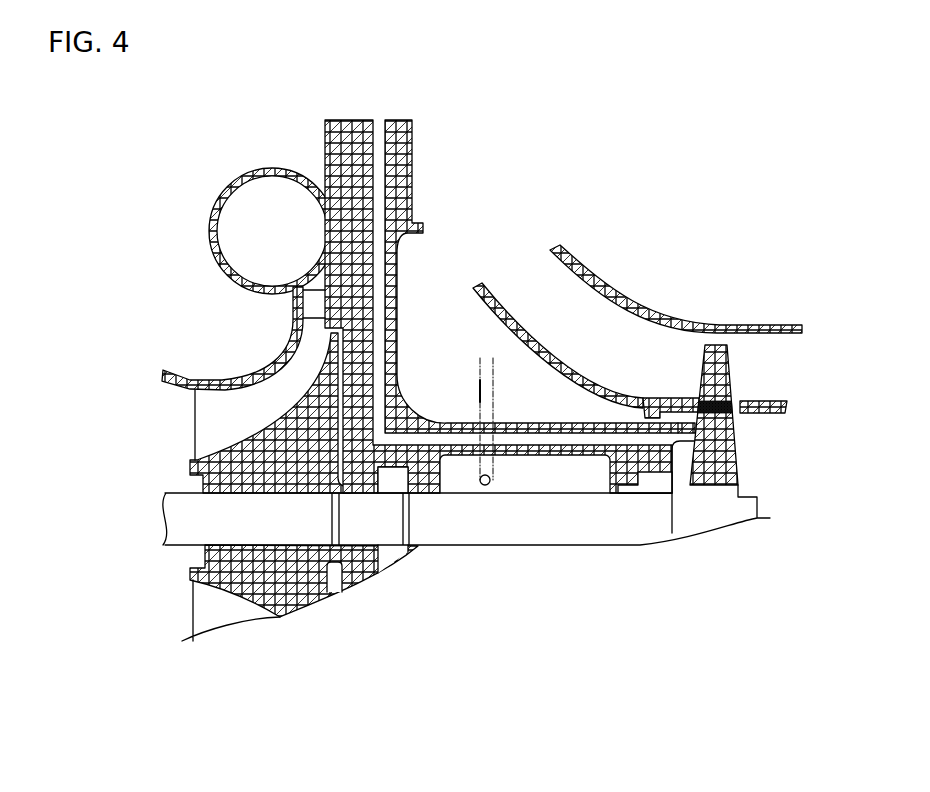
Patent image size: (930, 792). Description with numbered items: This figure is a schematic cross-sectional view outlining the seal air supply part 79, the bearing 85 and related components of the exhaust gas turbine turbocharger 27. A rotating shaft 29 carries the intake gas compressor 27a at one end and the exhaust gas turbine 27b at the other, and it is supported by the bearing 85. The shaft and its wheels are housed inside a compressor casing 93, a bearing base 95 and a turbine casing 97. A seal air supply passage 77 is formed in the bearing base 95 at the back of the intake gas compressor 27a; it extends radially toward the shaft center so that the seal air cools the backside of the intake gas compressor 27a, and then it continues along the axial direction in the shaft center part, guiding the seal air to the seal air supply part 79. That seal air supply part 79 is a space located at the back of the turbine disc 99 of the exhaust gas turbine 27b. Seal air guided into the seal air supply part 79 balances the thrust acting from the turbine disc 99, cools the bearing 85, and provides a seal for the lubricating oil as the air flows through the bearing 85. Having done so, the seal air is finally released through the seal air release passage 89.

The exhaust gas turbine turbocharger 27 is at (637, 266).
The intake gas compressor 27a is at (252, 583).
The exhaust gas turbine 27b is at (727, 358).
The rotating shaft 29 is at (490, 527).
The seal air supply passage 77 is at (499, 278).
The seal air supply part 79 is at (680, 472).
The bearing 85 is at (392, 480).
The seal air release passage 89 is at (480, 380).
The compressor casing 93 is at (212, 225).
The bearing base 95 is at (398, 272).
The turbine casing 97 is at (603, 290).
The turbine disc 99 is at (728, 369).